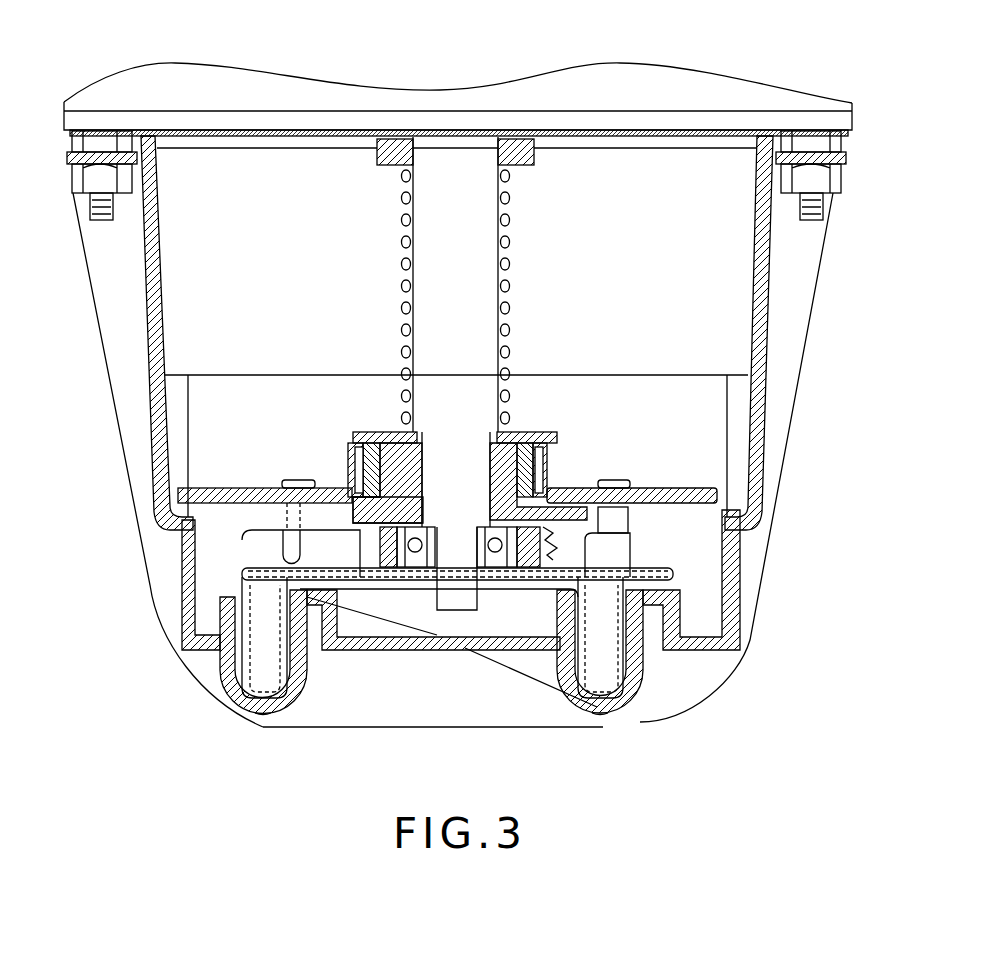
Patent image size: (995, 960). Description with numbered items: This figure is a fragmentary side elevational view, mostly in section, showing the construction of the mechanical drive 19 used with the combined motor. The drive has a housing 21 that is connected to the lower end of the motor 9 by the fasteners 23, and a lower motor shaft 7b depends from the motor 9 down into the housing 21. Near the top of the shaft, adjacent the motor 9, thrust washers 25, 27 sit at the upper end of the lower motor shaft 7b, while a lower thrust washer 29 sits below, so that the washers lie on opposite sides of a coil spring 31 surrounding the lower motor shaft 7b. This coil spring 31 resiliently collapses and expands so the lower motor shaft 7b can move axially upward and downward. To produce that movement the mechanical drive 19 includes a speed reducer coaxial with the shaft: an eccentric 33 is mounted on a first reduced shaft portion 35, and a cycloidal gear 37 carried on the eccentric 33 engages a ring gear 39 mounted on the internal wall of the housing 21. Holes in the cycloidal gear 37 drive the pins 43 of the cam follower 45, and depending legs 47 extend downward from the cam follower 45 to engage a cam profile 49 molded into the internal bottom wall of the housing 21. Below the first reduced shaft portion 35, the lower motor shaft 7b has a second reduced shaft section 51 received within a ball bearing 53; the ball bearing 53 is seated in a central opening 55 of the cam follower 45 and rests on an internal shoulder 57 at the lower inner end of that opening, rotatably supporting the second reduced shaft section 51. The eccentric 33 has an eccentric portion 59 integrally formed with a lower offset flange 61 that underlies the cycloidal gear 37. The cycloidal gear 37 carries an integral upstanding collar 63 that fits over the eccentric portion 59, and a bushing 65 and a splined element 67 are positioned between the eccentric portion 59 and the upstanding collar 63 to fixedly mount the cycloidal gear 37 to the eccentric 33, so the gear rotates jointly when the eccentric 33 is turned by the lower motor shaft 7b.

The motor 9 is at (212, 97).
The fasteners 23 is at (100, 192).
The thrust washer 25 is at (535, 148).
The thrust washer 27 is at (527, 158).
The lower motor shaft 7b is at (473, 275).
The coil spring 31 is at (517, 330).
The eccentric 33 is at (400, 455).
The bushing 65 is at (372, 436).
The splined element 67 is at (357, 446).
The upstanding collar 63 is at (348, 483).
The eccentric portion 59 is at (393, 493).
The lower thrust washer 29 is at (517, 440).
The first reduced shaft portion 35 is at (517, 446).
The lower offset flange 61 is at (553, 510).
The cycloidal gear 37 is at (278, 494).
The pins 43 is at (303, 480).
The ring gear 39 is at (724, 416).
The housing 21 is at (150, 475).
The cam follower 45 is at (688, 573).
The central opening 55 is at (400, 560).
The ball bearing 53 is at (420, 560).
The internal shoulder 57 is at (523, 567).
The second reduced shaft section 51 is at (456, 597).
The depending legs 47 is at (607, 680).
The cam profile 49 is at (262, 720).
The mechanical drive 19 is at (714, 714).